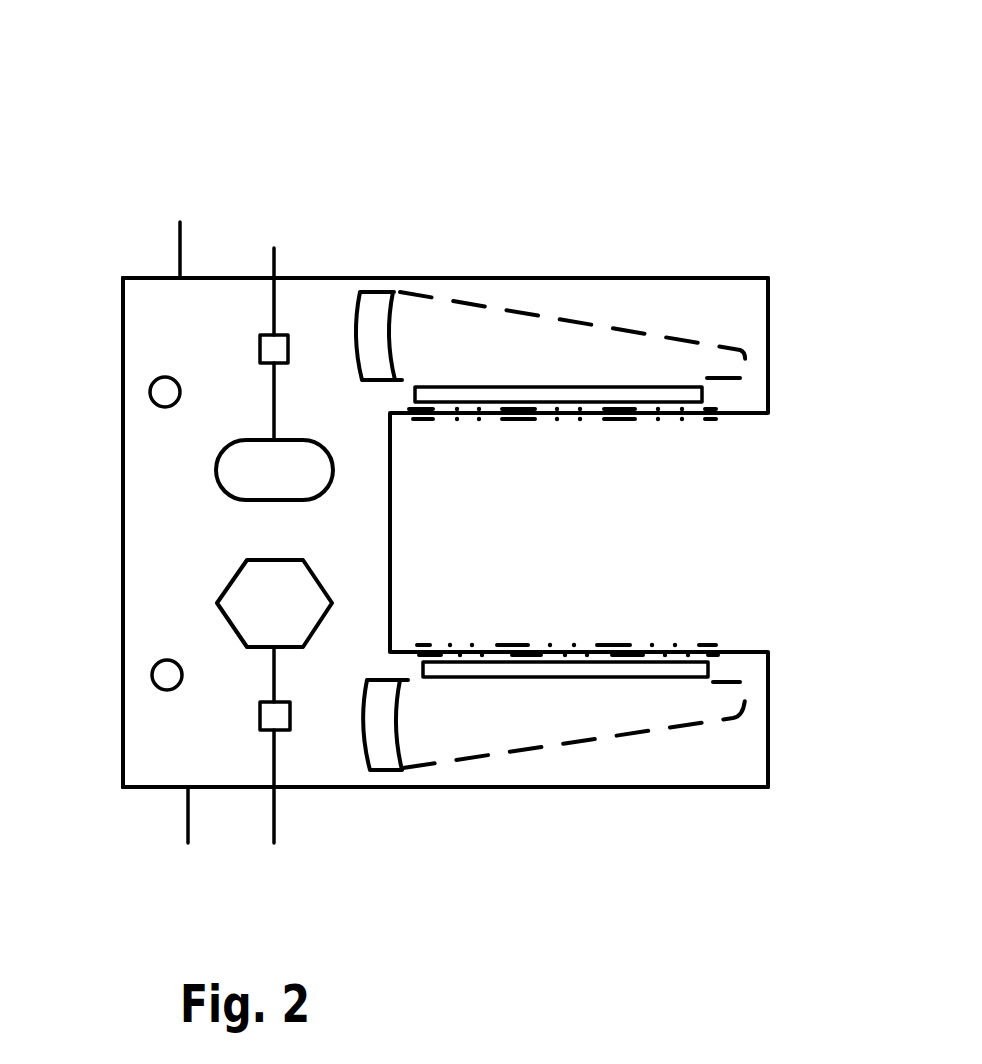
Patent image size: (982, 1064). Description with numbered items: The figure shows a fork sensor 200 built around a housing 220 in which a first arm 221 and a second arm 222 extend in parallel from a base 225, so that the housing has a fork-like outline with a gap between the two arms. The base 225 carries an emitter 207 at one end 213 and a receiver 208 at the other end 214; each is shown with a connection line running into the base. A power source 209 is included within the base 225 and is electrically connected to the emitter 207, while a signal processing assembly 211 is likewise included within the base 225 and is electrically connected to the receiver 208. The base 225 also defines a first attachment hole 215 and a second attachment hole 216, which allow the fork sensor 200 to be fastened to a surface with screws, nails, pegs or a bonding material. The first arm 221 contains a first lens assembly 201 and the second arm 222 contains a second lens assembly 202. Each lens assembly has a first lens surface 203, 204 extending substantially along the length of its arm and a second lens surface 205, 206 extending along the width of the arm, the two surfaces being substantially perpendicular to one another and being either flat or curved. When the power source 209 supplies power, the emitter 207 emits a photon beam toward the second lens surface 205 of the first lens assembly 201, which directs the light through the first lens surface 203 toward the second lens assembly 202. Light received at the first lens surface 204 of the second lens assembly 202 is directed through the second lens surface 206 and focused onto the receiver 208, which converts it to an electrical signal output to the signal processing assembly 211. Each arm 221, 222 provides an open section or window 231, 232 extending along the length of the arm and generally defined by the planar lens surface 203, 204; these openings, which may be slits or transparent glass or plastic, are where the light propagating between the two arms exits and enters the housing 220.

The fork sensor 200 is at (560, 102).
The first lens assembly 201 is at (478, 303).
The second lens assembly 202 is at (492, 755).
The first lens surface 203 is at (702, 395).
The first lens surface 204 is at (708, 668).
The second lens surface 205 is at (374, 290).
The second lens surface 206 is at (383, 772).
The emitter 207 is at (273, 327).
The receiver 208 is at (275, 763).
The power source 209 is at (274, 470).
The signal processing assembly 211 is at (274, 603).
The end of base 213 is at (180, 232).
The end of base 214 is at (188, 833).
The first attachment hole 215 is at (162, 391).
The second attachment hole 216 is at (164, 677).
The housing 220 is at (116, 300).
The first arm 221 is at (712, 278).
The second arm 222 is at (712, 787).
The base 225 is at (137, 503).
The open section 231 is at (722, 418).
The open section 232 is at (697, 645).